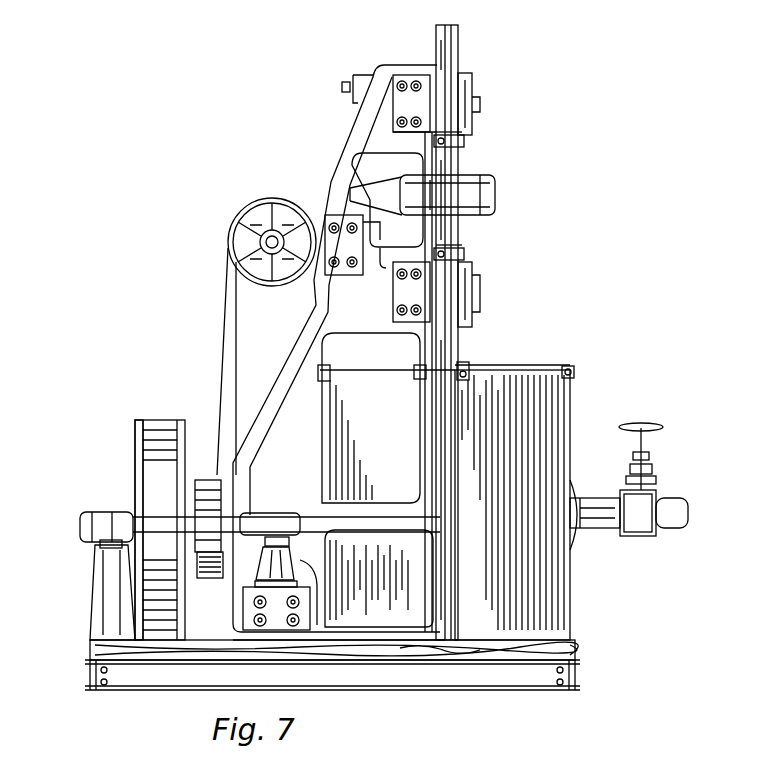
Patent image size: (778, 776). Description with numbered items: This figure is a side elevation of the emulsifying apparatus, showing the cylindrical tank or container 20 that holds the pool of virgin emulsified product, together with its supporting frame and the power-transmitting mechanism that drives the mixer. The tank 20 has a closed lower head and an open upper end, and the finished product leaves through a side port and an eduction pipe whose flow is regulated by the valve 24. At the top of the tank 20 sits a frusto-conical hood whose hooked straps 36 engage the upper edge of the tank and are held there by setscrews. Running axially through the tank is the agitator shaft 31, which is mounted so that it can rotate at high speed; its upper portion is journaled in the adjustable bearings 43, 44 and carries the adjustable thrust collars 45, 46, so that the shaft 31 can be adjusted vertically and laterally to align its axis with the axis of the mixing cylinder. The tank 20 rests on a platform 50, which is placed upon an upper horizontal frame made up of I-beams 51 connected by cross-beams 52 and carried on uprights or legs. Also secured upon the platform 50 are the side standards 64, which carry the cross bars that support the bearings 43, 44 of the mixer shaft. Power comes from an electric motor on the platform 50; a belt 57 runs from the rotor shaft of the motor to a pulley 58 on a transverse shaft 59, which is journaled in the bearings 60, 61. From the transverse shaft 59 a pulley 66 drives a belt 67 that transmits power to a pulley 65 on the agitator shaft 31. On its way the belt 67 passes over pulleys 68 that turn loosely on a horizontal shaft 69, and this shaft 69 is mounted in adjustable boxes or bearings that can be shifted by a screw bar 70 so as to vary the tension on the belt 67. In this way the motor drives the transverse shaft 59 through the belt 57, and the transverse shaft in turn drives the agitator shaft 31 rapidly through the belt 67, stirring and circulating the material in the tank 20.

The tank 20 is at (490, 370).
The valve 24 is at (636, 421).
The agitator shaft 31 is at (458, 35).
The hooked straps 36 is at (569, 366).
The adjustable bearing 43 is at (472, 98).
The adjustable bearing 44 is at (472, 290).
The adjustable thrust collar 45 is at (464, 141).
The adjustable thrust collar 46 is at (464, 256).
The platform 50 is at (575, 651).
The I-beams 51 is at (580, 677).
The cross-beams 52 is at (485, 690).
The belt 57 is at (166, 420).
The pulley 58 is at (135, 430).
The transverse shaft 59 is at (196, 482).
The bearing 60 is at (92, 542).
The bearing 61 is at (292, 547).
The side standard 64 is at (368, 333).
The pulley 65 is at (492, 183).
The pulley 66 is at (214, 578).
The belt 67 is at (218, 302).
The pulley 68 is at (270, 286).
The horizontal shaft 69 is at (265, 198).
The screw bar 70 is at (384, 266).